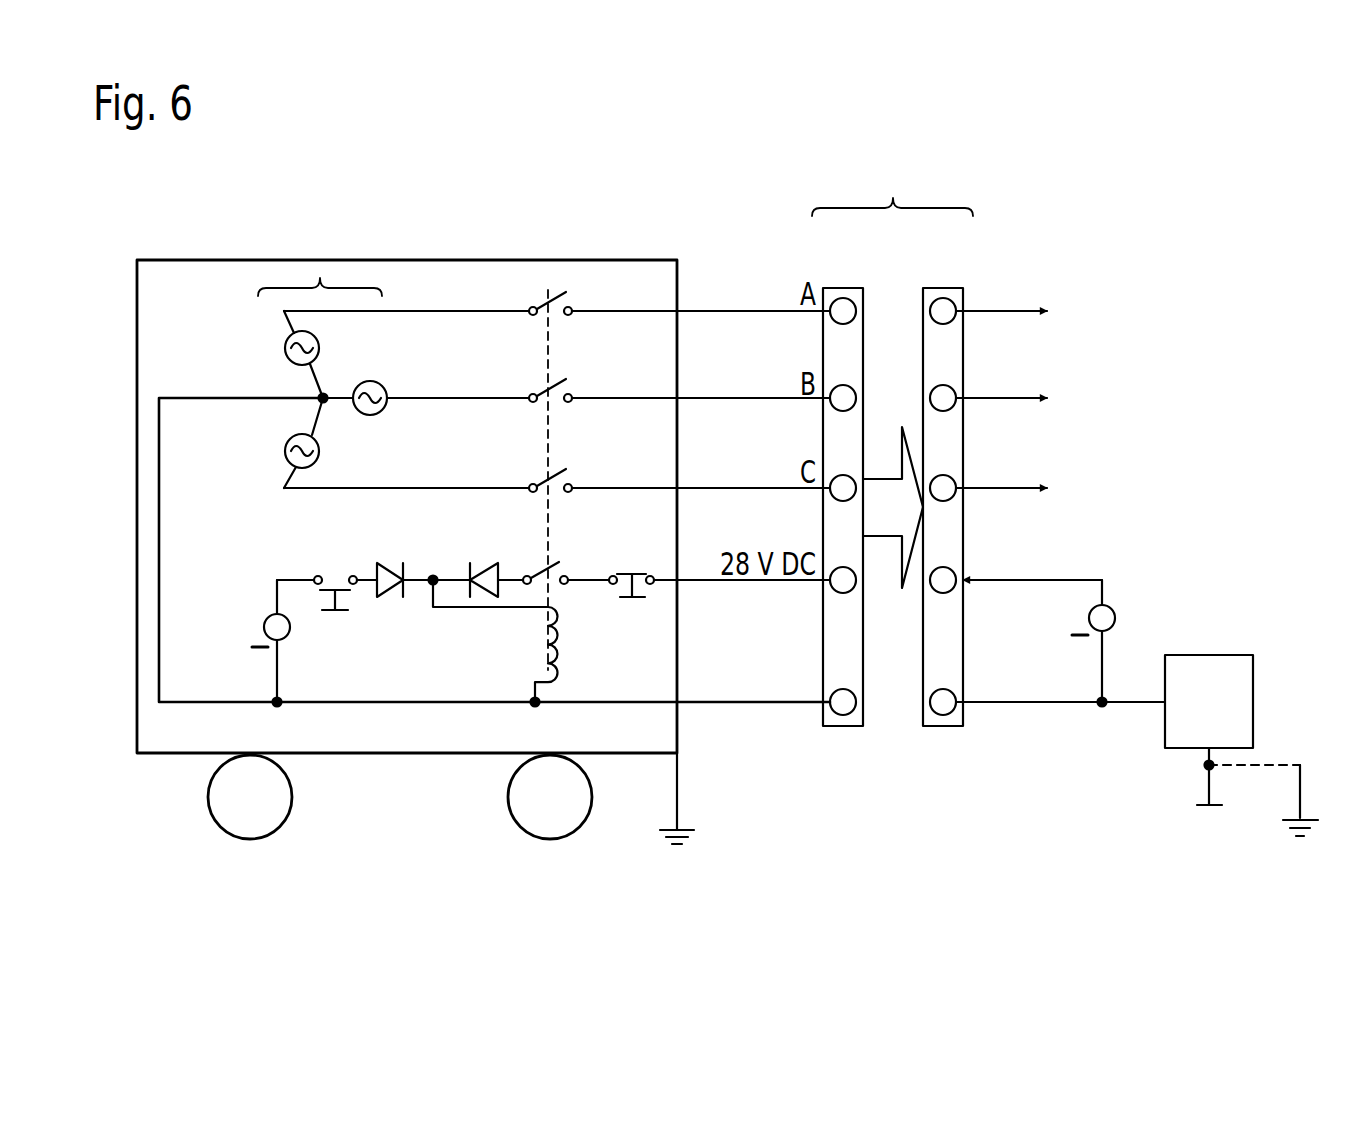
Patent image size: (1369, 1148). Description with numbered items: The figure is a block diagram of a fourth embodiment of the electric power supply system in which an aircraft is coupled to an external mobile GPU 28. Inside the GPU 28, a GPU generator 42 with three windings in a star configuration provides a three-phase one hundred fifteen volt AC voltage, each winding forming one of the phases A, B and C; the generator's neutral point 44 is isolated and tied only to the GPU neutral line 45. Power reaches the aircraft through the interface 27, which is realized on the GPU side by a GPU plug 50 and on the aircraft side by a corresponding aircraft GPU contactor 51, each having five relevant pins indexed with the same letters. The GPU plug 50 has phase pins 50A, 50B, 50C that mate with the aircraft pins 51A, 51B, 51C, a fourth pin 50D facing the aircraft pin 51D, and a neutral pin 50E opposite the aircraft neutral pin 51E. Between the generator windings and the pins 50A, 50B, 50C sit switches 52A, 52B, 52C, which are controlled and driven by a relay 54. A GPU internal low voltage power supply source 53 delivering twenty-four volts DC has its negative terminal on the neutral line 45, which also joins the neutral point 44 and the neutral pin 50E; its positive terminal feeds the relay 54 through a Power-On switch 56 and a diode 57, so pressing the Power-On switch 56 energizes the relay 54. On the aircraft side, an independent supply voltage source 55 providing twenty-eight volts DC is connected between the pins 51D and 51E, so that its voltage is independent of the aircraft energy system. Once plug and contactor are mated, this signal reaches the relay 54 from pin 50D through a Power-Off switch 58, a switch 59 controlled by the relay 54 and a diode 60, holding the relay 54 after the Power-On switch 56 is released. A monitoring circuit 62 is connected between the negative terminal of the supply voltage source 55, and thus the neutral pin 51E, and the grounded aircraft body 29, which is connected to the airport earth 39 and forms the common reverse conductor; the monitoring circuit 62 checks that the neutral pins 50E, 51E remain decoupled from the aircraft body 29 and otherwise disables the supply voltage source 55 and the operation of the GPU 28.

The interface 27 is at (892, 369).
The mobile GPU 28 is at (137, 321).
The aircraft body 29 is at (1197, 800).
The airport earth 39 is at (682, 828).
The GPU generator 42 is at (320, 268).
The neutral point 44 is at (327, 403).
The neutral line 45 is at (159, 536).
The GPU plug 50 is at (843, 726).
The GPU plug pin A 50A is at (843, 298).
The GPU plug pin B 50B is at (836, 408).
The GPU plug pin C 50C is at (836, 498).
The fourth pin of GPU plug 50D is at (836, 590).
The neutral pin of GPU plug 50E is at (836, 692).
The aircraft GPU contactor 51 is at (943, 726).
The aircraft GPU contactor pin A 51A is at (943, 298).
The aircraft GPU contactor pin B 51B is at (951, 408).
The aircraft GPU contactor pin C 51C is at (951, 498).
The fourth pin of aircraft GPU contactor 51D is at (951, 590).
The neutral pin of aircraft GPU contactor 51E is at (951, 692).
The switch A 52A is at (550, 290).
The switch B 52B is at (558, 385).
The switch C 52C is at (560, 475).
The low voltage power supply source 53 is at (291, 634).
The relay 54 is at (562, 638).
The supply voltage source 55 is at (1108, 607).
The Power-On switch 56 is at (333, 572).
The diode 57 is at (393, 560).
The Power-Off switch 58 is at (638, 572).
The switch controlled via the relay 59 is at (556, 563).
The diode 60 is at (483, 566).
The monitoring circuit 62 is at (1253, 702).